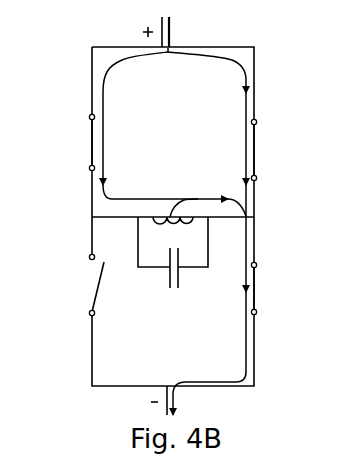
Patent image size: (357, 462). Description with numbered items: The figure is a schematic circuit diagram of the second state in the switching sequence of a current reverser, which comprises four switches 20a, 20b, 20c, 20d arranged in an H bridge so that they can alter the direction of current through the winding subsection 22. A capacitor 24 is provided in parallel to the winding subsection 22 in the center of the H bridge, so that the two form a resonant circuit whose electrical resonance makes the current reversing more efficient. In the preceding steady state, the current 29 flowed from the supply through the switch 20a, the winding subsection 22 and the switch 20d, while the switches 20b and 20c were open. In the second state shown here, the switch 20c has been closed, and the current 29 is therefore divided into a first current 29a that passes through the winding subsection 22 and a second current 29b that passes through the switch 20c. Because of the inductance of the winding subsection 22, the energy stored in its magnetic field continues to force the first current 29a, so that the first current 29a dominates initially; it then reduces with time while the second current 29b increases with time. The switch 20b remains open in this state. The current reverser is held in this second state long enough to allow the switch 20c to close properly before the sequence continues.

The current 29 is at (172, 33).
The first current 29a is at (103, 107).
The second current 29b is at (246, 140).
The switch 20a is at (92, 168).
The switch 20b is at (92, 313).
The switch 20c is at (254, 178).
The switch 20d is at (282, 308).
The winding subsection 22 is at (202, 199).
The capacitor 24 is at (178, 273).